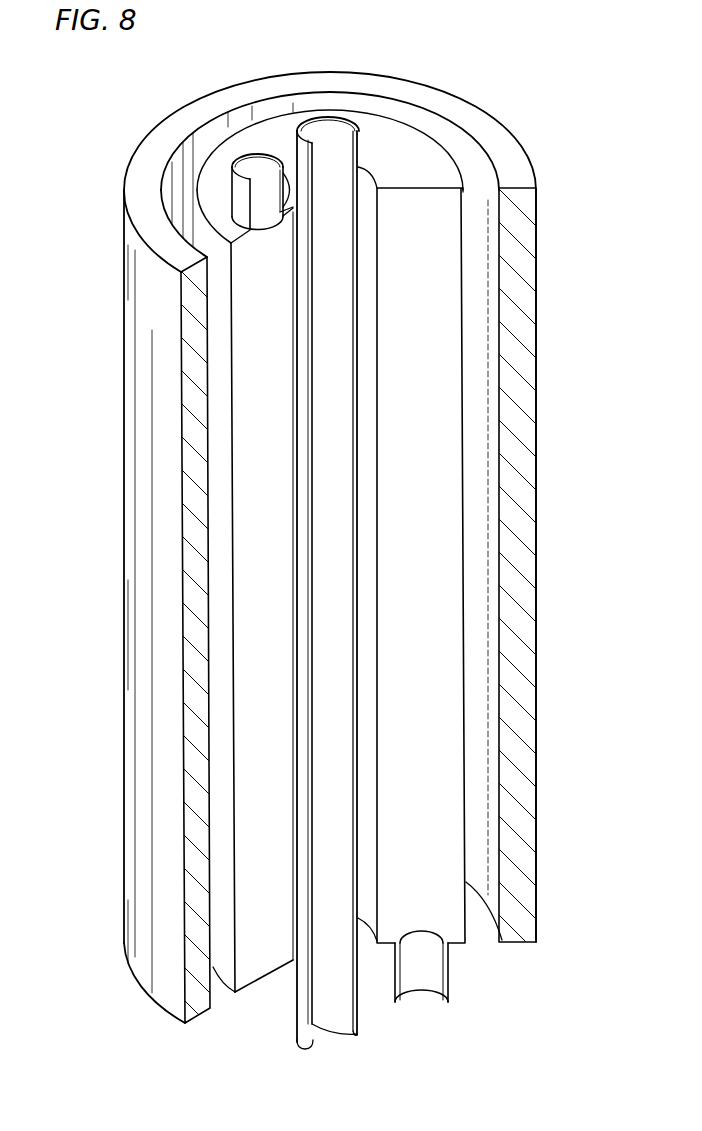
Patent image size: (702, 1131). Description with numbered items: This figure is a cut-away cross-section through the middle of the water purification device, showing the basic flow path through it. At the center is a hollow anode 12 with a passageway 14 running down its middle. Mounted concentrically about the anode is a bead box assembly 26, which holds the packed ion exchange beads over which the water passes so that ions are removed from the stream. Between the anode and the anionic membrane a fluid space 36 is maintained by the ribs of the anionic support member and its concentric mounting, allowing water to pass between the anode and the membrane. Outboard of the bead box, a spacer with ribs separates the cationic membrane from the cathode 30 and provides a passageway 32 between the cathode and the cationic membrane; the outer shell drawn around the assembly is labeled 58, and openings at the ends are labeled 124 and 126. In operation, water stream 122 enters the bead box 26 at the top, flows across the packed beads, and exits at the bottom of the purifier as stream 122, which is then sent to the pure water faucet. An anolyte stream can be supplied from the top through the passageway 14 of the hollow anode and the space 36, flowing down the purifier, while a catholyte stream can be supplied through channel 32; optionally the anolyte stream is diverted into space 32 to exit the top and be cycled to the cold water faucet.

The hollow anode 12 is at (304, 315).
The passageway 14 is at (347, 747).
The bead box assembly 26 is at (247, 432).
The cathode 30 is at (206, 690).
The passageway 32 is at (220, 488).
The fluid space 36 is at (363, 390).
The outer housing 58 is at (190, 594).
The water stream 122 is at (258, 172).
The annular passage 124 is at (478, 185).
The central conduit passage 126 is at (330, 137).